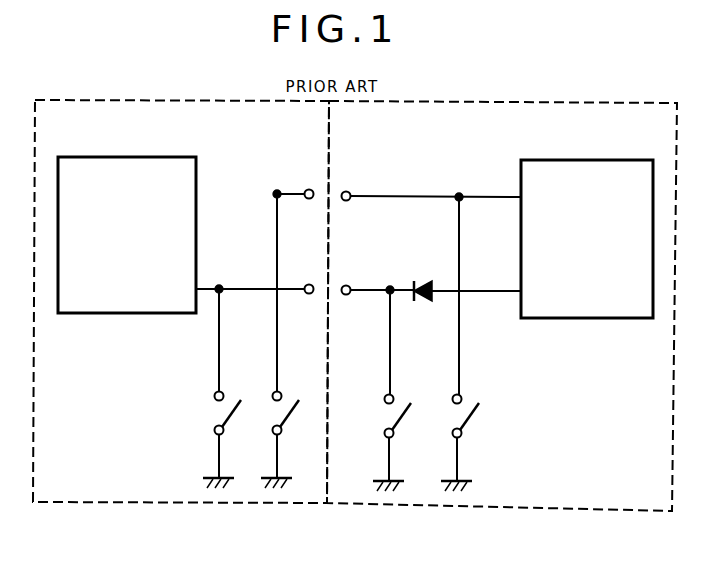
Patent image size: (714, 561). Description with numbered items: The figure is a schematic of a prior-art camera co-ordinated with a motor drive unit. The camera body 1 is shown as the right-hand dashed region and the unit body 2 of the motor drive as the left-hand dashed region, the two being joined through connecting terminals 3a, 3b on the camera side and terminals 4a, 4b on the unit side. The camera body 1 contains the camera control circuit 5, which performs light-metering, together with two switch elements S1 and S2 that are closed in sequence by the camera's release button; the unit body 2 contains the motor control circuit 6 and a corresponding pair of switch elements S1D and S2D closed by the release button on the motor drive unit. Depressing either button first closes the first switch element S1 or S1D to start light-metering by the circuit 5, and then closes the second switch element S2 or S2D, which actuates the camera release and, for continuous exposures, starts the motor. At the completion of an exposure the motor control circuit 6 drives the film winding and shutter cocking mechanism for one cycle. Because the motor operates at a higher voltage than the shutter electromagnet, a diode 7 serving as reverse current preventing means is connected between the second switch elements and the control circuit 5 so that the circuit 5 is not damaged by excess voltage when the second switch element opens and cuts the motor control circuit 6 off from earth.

The camera body 1 is at (520, 492).
The unit body 2 is at (103, 487).
The terminal 3a is at (429, 184).
The terminal 3b is at (429, 279).
The terminal 4a is at (296, 184).
The terminal 4b is at (257, 279).
The circuit 5 is at (587, 239).
The motor control circuit 6 is at (127, 235).
The diode 7 is at (423, 278).
The first switch element S1 is at (470, 415).
The second switch element S2 is at (403, 417).
The first switch element S1D is at (291, 414).
The second switch element S2D is at (233, 414).